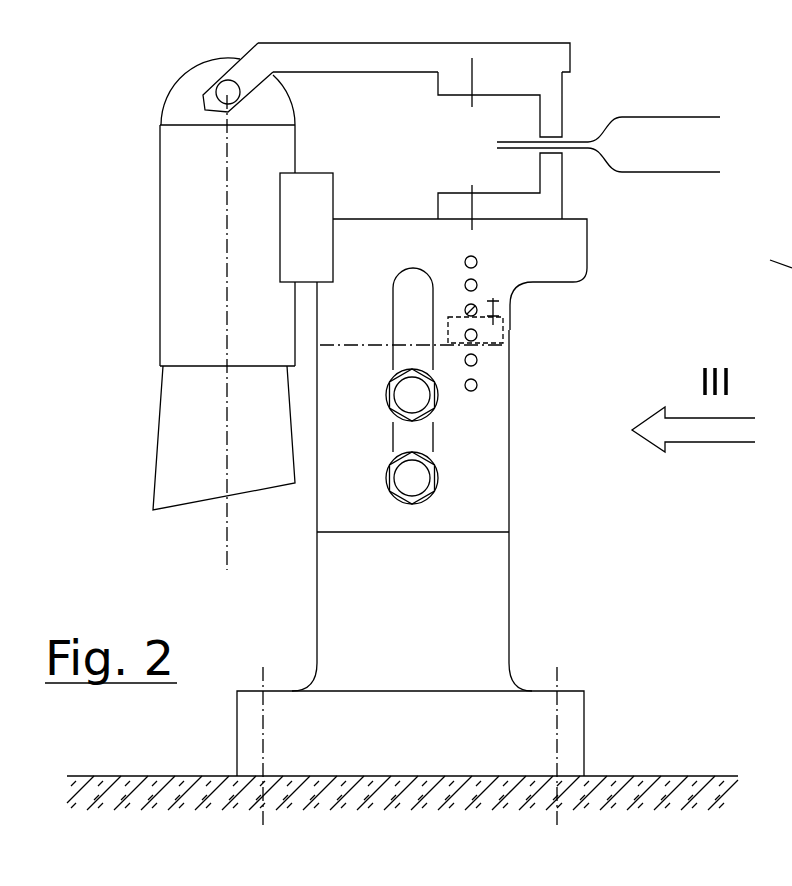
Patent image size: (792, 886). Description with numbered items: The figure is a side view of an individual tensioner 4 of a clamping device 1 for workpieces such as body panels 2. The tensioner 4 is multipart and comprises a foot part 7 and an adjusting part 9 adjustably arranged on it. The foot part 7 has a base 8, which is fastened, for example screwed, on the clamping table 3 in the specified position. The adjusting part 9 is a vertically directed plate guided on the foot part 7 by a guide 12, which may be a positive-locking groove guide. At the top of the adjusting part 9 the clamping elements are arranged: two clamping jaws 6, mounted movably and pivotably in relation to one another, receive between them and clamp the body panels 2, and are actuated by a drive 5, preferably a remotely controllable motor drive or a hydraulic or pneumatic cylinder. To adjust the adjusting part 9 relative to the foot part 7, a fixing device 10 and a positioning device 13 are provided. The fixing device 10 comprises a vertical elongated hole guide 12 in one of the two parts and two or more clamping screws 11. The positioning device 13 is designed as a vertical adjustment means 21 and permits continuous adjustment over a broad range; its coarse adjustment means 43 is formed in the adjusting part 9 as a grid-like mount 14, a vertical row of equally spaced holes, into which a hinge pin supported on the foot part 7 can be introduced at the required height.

The clamping device 1 is at (655, 447).
The tensioner 4 is at (555, 457).
The body panels 2 is at (680, 135).
The clamping table 3 is at (678, 776).
The drive 5 is at (177, 322).
The clamping jaws 6 is at (552, 185).
The foot part 7 is at (492, 570).
The base 8 is at (567, 697).
The adjusting part 9 is at (568, 237).
The fixing device 10 is at (377, 427).
The clamping screws 11 is at (412, 482).
The elongated hole guide 12 is at (412, 292).
The positioning device 13 is at (633, 290).
The vertical adjustment means 21 is at (512, 305).
The grid-like mount 14 is at (573, 323).
The coarse adjustment means 43 is at (478, 335).